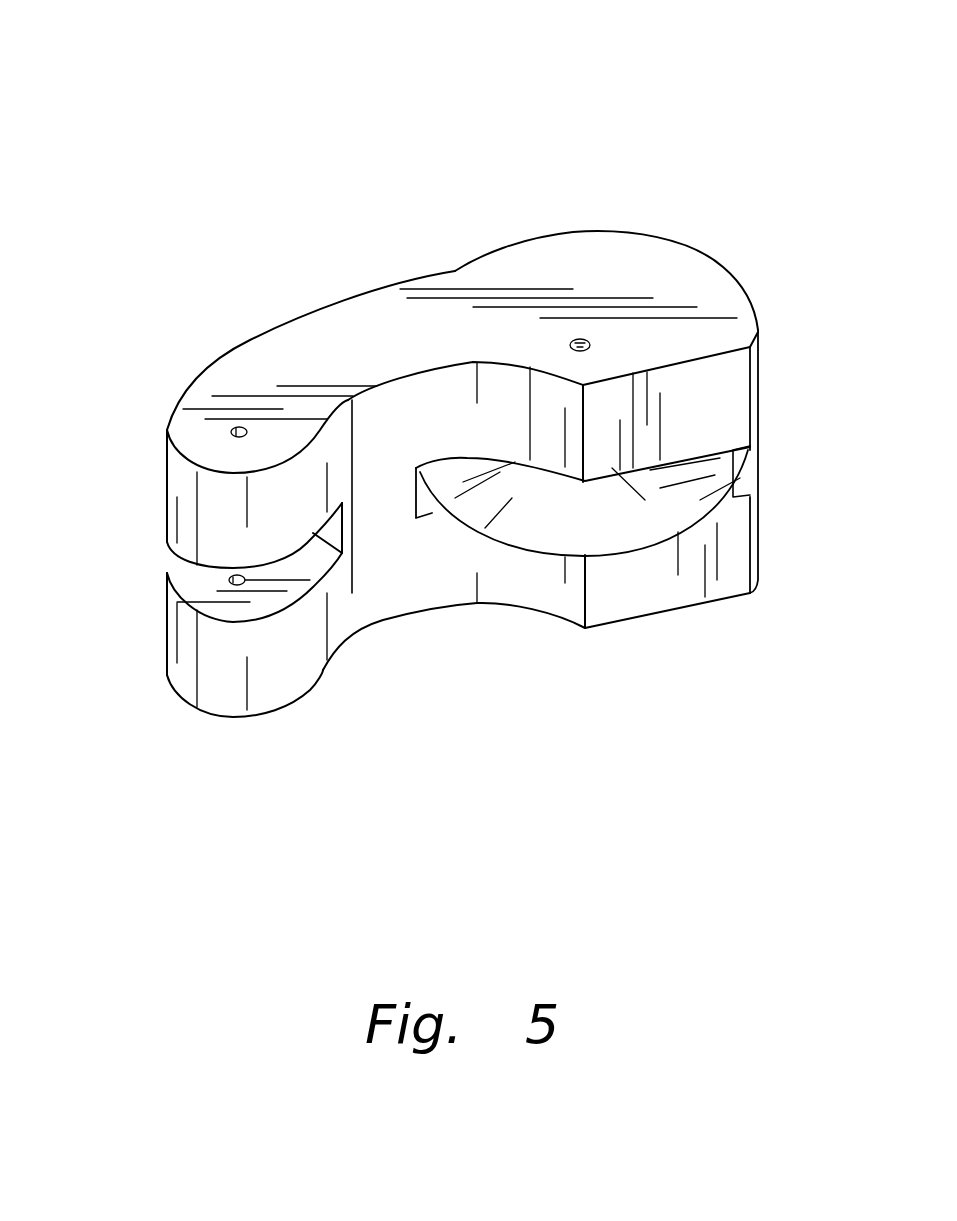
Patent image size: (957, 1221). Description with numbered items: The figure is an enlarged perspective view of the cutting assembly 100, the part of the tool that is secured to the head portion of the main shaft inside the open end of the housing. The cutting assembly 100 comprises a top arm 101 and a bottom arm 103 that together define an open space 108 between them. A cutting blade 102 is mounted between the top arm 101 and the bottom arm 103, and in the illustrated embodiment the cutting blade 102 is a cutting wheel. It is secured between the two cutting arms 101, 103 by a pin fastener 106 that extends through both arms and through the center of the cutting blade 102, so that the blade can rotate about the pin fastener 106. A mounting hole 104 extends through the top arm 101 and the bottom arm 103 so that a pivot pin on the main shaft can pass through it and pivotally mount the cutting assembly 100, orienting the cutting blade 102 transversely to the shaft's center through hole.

The cutting assembly 100 is at (382, 92).
The top arm 101 is at (333, 328).
The cutting blade 102 is at (670, 522).
The bottom arm 103 is at (625, 597).
The mounting hole 104 is at (238, 427).
The pin fastener 106 is at (580, 337).
The open space 108 is at (233, 605).